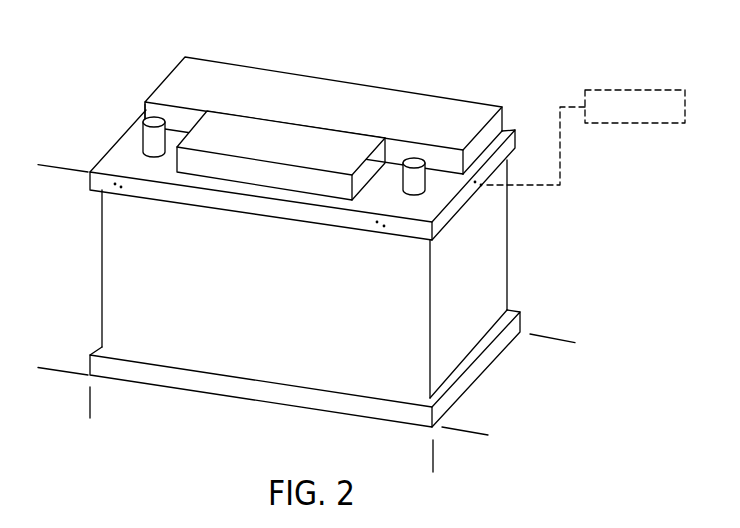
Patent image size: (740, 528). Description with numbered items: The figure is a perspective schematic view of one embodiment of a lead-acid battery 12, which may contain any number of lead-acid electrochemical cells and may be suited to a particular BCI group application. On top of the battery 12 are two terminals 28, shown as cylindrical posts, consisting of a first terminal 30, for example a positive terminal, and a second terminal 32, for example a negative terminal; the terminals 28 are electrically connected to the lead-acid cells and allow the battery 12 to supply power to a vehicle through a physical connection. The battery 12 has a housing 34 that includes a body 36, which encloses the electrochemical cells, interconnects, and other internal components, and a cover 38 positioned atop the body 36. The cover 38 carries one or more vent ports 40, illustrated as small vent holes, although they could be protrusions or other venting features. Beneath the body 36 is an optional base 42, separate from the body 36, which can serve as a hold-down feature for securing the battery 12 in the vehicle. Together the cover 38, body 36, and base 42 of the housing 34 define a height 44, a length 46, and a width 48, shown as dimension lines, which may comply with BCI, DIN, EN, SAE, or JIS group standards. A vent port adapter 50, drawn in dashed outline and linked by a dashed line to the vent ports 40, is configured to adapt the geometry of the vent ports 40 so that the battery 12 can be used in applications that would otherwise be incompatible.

The battery 12 is at (448, 61).
The terminals 28 is at (142, 116).
The first terminal 30 is at (142, 148).
The second terminal 32 is at (414, 158).
The housing 34 is at (503, 105).
The body 36 is at (523, 206).
The cover 38 is at (516, 143).
The vent ports 40 is at (126, 188).
The base 42 is at (522, 323).
The height 44 is at (52, 168).
The length 46 is at (433, 457).
The width 48 is at (557, 339).
The vent port adapter 50 is at (642, 90).